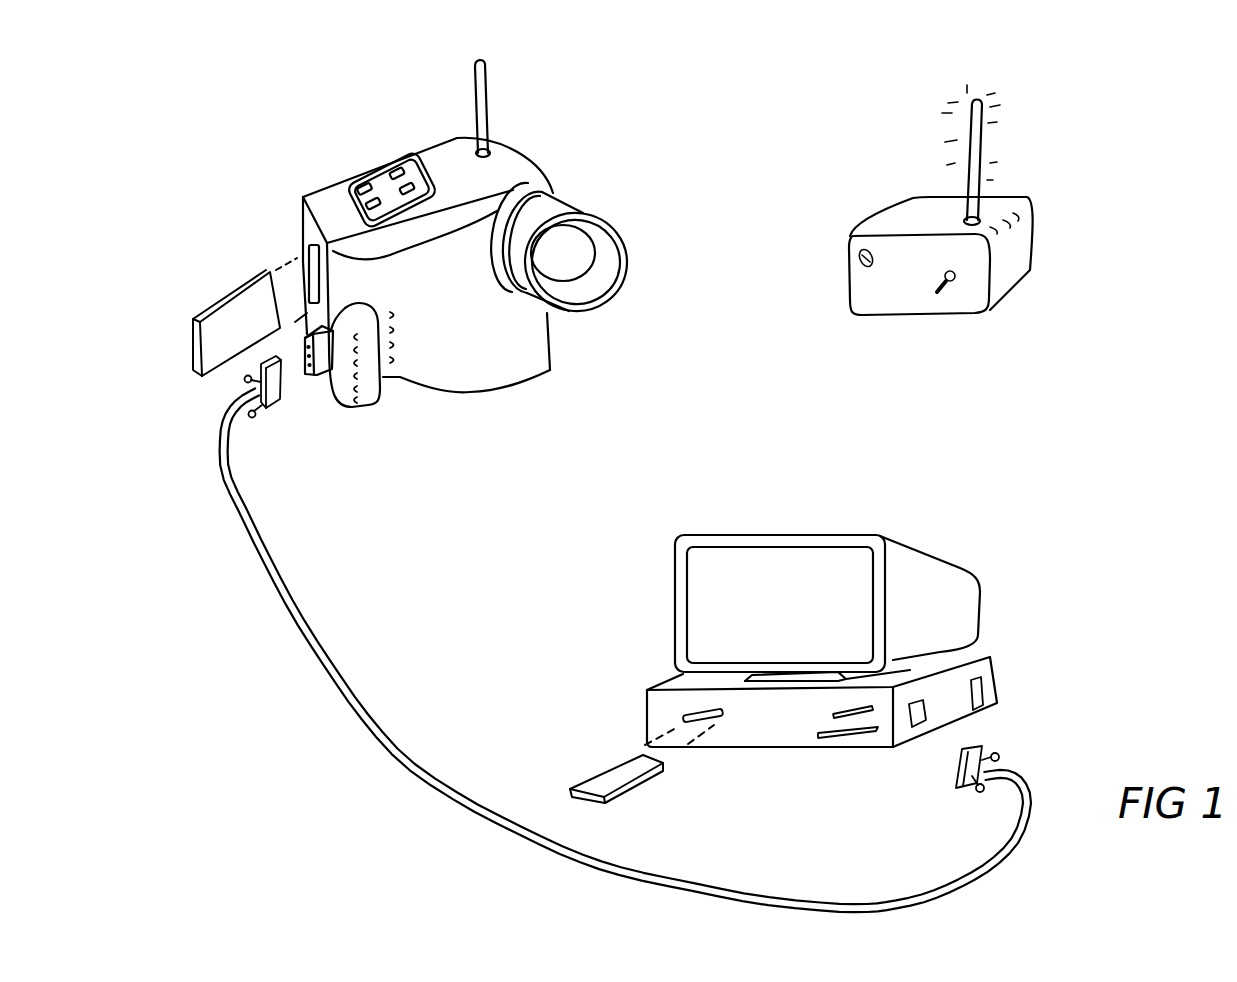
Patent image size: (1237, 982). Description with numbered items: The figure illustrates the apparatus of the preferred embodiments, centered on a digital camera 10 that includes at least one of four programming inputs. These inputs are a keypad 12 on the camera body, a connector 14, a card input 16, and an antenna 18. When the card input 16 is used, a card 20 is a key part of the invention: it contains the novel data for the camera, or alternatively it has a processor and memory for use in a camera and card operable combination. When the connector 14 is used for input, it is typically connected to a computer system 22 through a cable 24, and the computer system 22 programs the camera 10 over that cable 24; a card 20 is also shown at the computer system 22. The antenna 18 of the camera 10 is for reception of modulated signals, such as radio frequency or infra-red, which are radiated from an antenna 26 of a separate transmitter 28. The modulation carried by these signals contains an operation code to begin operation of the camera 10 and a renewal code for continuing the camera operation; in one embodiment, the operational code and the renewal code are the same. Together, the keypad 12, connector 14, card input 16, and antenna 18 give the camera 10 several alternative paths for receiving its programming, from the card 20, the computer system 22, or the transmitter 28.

The digital camera 10 is at (586, 122).
The keypad 12 is at (377, 173).
The connector 14 is at (325, 368).
The card input 16 is at (302, 251).
The antenna 18 is at (497, 84).
The card 20 is at (230, 303).
The computer system 22 is at (718, 512).
The cable 24 is at (306, 623).
The antenna 26 is at (978, 143).
The transmitter 28 is at (1063, 195).